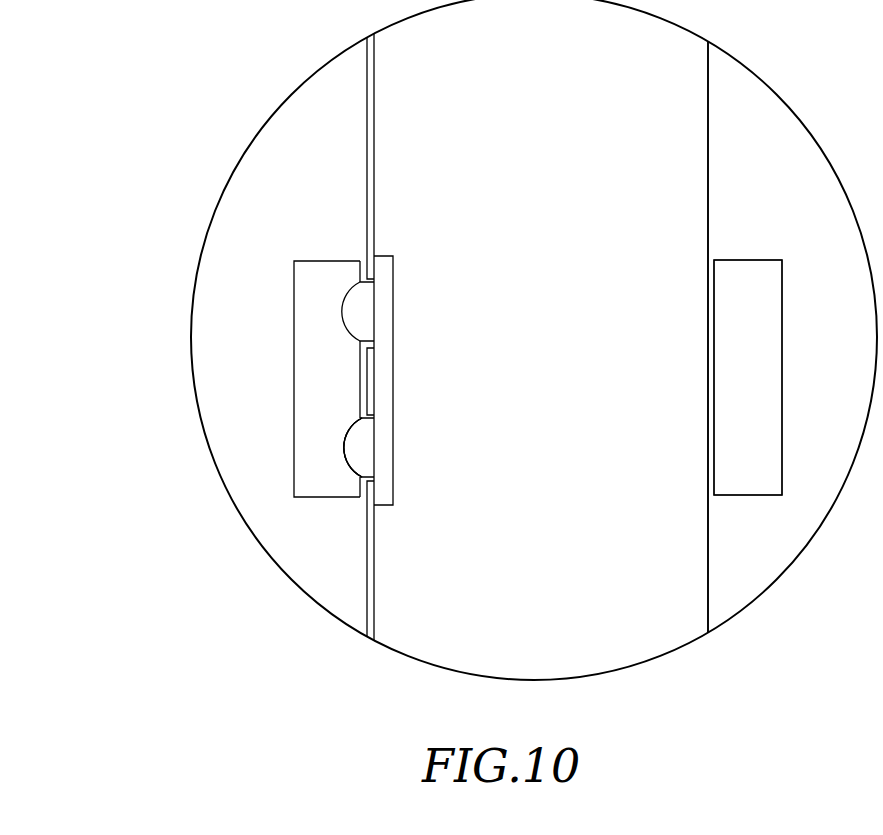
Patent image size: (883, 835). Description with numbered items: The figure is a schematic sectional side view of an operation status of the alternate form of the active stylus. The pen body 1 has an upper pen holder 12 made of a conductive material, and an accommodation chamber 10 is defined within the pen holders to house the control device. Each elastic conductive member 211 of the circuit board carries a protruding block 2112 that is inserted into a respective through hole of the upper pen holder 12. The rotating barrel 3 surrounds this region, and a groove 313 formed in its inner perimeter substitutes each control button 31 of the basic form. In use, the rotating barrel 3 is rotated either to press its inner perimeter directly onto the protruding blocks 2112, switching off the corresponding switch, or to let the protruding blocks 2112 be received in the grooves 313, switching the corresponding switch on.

The pen body 1 is at (792, 148).
The accommodation chamber 10 is at (672, 214).
The upper pen holder 12 is at (710, 148).
The elastic conductive member 211 is at (478, 280).
The protruding block 2112 is at (387, 316).
The rotating barrel 3 is at (312, 373).
The control button 31 is at (118, 467).
The groove 313 is at (343, 457).